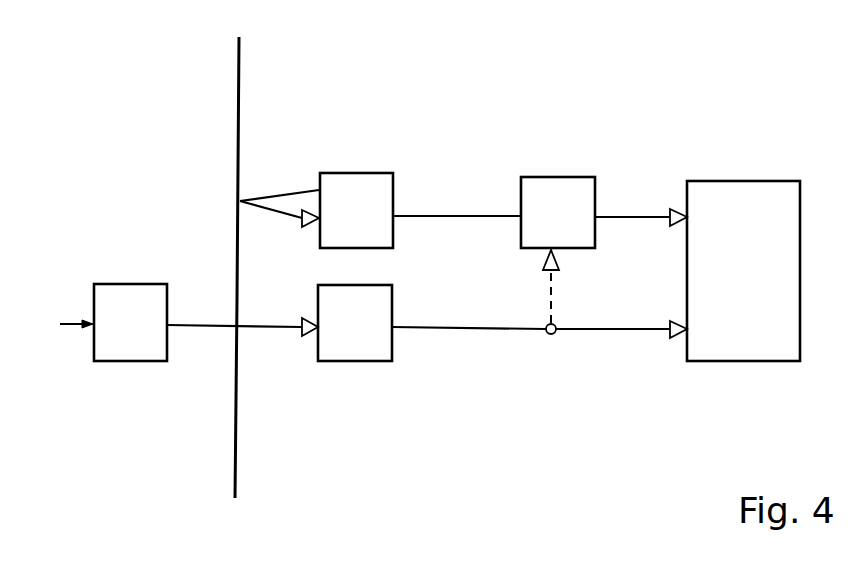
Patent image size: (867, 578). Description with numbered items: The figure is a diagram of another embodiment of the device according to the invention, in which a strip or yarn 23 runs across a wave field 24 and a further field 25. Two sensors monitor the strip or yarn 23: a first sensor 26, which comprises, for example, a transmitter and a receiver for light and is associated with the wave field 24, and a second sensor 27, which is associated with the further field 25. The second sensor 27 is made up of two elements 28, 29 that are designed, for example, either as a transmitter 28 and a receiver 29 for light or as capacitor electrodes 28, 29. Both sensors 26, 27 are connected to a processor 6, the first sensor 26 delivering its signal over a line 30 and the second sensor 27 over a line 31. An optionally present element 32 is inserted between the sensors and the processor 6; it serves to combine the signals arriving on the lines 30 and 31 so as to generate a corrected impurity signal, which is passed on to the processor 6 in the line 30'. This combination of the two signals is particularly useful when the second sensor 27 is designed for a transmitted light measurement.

The processor 6 is at (746, 180).
The strip or yarn 23 is at (241, 52).
The wave field 24 is at (269, 168).
The further field 25 is at (198, 276).
The first sensor 26 is at (364, 172).
The second sensor 27 is at (59, 326).
The transmitter 28 is at (137, 362).
The receiver 29 is at (358, 362).
The line 30 is at (457, 193).
The line 30' is at (641, 201).
The line 31 is at (468, 332).
The element 32 is at (565, 176).